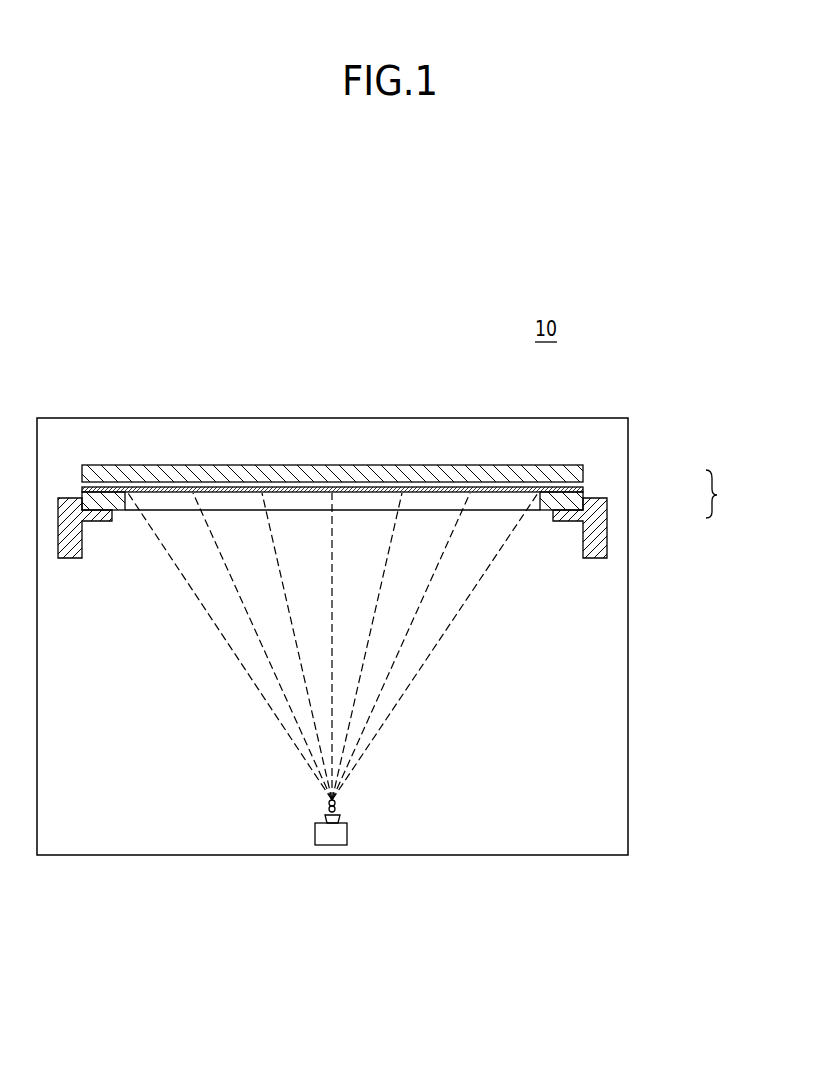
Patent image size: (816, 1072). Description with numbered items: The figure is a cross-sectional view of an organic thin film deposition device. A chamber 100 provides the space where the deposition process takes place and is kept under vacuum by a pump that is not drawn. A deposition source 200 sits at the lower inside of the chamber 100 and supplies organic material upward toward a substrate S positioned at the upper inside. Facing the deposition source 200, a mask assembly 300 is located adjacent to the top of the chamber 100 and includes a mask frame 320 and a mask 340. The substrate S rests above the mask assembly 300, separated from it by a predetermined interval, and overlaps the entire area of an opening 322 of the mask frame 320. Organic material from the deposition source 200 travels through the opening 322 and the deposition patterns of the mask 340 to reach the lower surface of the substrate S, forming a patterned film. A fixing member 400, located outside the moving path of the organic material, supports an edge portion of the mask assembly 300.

The chamber 100 is at (628, 723).
The deposition source 200 is at (333, 838).
The mask assembly 300 is at (729, 494).
The mask frame 320 is at (392, 448).
The opening 322 is at (373, 503).
The mask 340 is at (585, 489).
The fixing member 400 is at (607, 545).
The substrate S is at (458, 467).